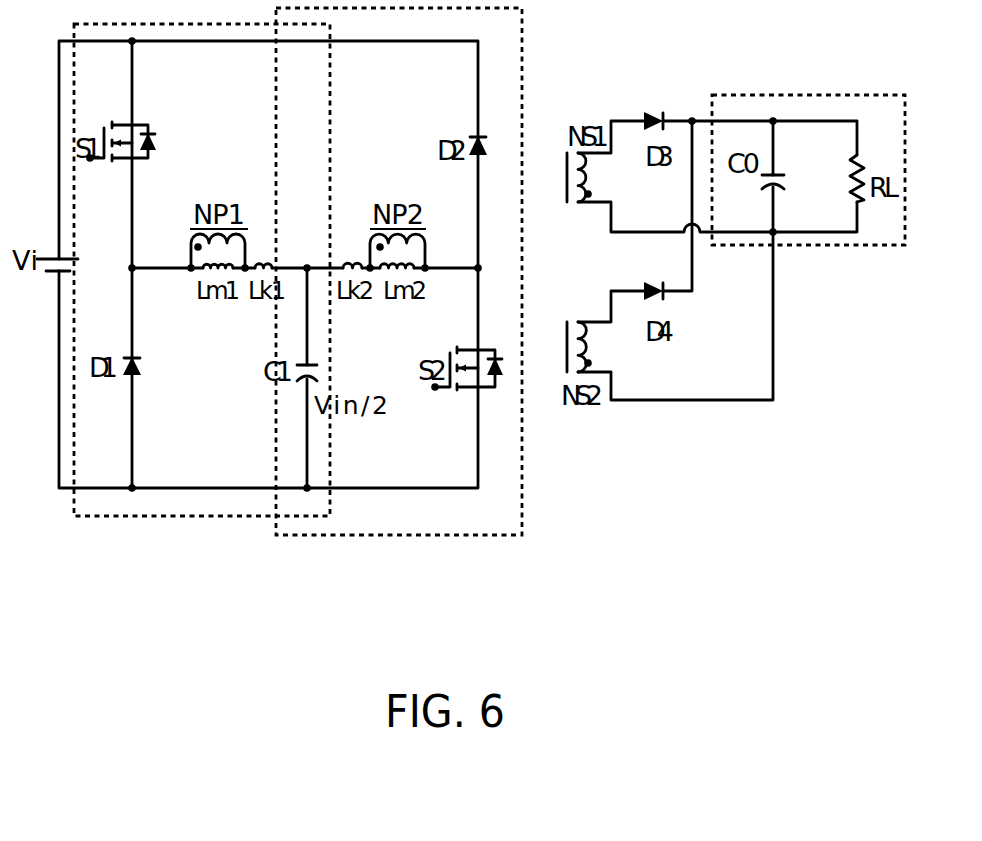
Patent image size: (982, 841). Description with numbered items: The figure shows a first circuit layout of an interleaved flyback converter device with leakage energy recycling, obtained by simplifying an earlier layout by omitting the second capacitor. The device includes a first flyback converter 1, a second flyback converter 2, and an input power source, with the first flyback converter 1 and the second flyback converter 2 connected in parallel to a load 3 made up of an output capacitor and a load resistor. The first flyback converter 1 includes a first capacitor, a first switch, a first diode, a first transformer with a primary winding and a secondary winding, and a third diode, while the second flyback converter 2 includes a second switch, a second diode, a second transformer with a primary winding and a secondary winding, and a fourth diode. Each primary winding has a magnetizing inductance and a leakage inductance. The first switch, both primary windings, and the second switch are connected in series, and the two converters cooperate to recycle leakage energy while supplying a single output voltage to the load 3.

The first flyback converter 1 is at (190, 517).
The second flyback converter 2 is at (397, 536).
The load 3 is at (845, 246).